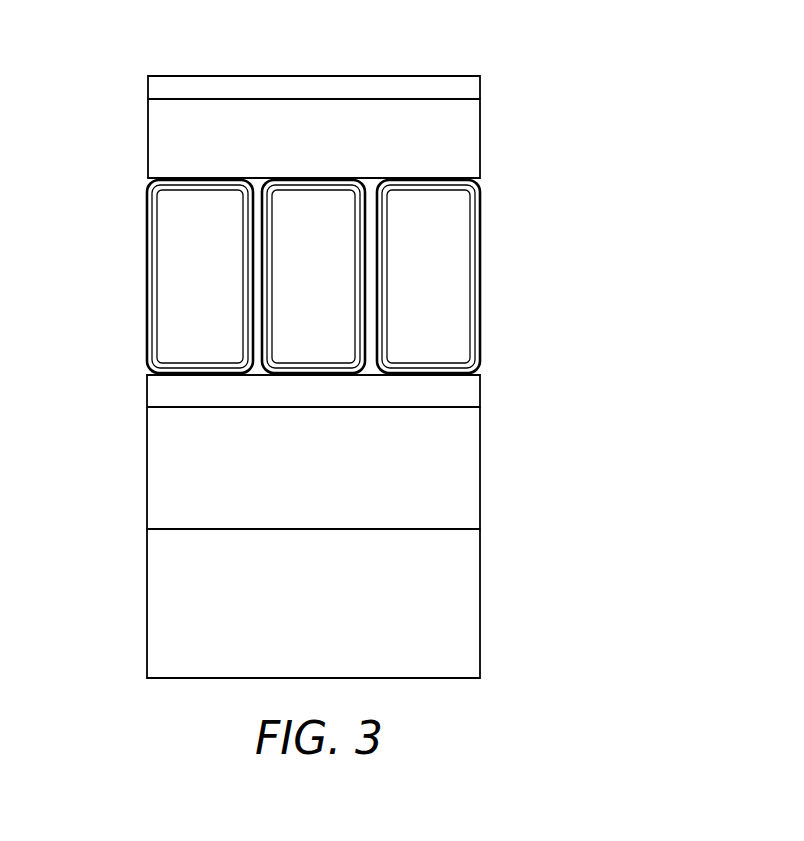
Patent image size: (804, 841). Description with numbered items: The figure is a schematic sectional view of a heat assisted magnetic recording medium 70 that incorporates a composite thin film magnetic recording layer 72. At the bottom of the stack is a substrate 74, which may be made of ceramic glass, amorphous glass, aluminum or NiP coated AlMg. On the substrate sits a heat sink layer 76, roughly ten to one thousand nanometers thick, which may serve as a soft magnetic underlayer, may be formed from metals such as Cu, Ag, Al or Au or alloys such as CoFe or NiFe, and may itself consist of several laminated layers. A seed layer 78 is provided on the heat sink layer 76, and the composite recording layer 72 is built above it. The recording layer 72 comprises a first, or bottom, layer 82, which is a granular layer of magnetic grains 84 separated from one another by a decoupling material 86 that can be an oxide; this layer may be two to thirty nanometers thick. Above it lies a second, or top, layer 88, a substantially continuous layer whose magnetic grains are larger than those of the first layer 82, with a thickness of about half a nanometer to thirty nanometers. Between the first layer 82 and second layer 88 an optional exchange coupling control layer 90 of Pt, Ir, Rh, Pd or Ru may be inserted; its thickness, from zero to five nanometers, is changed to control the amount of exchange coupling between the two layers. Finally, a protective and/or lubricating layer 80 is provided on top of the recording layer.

The heat assisted magnetic recording medium 70 is at (615, 195).
The composite thin film magnetic recording layer 72 is at (123, 100).
The substrate 74 is at (470, 608).
The heat sink layer 76 is at (468, 478).
The seed layer 78 is at (472, 393).
The protective and/or lubricating layer 80 is at (482, 91).
The first layer 82 is at (540, 178).
The magnetic grains 84 is at (412, 353).
The decoupling material 86 is at (258, 375).
The second layer 88 is at (474, 138).
The exchange coupling control layer 90 is at (195, 177).